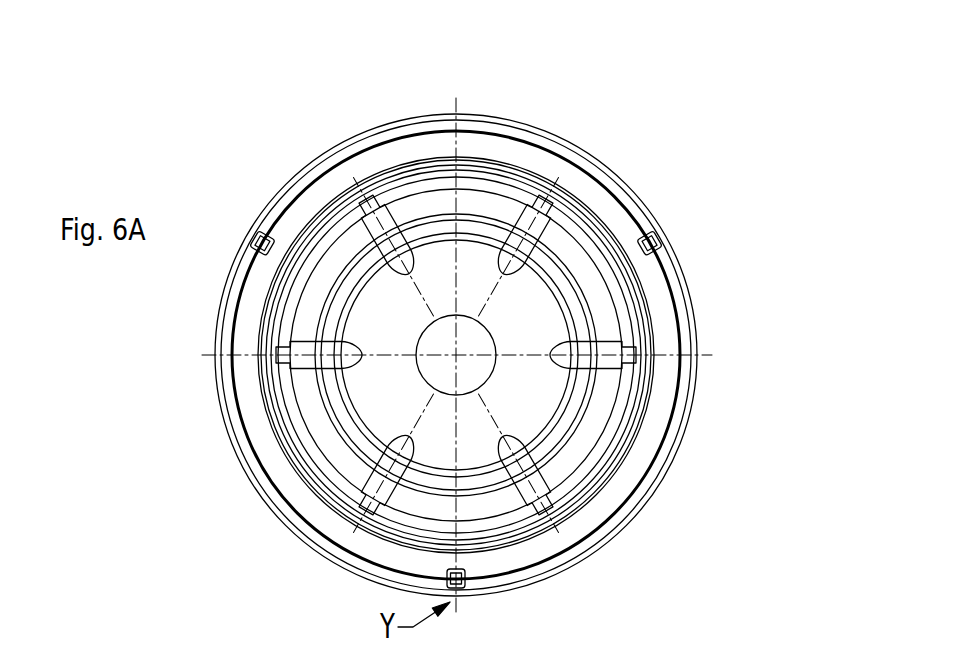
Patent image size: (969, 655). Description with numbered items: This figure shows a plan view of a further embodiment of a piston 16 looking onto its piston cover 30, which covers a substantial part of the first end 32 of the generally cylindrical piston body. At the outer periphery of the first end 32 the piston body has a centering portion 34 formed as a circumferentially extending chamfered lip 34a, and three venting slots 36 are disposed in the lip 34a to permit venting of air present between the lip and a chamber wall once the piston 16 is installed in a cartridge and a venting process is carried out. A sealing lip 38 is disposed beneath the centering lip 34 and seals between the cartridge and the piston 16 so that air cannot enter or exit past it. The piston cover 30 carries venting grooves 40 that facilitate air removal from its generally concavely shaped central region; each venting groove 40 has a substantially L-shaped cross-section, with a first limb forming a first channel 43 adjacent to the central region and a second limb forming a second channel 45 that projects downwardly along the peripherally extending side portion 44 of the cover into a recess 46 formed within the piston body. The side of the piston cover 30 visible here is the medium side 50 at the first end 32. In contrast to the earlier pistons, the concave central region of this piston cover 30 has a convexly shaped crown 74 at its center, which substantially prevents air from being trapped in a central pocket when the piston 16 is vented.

The piston 16 is at (560, 103).
The piston cover 30 is at (597, 419).
The first end 32 is at (593, 448).
The centering portion 34 is at (517, 355).
The chamfered lip 34a is at (676, 284).
The venting slots 36 is at (252, 232).
The sealing lip 38 is at (697, 326).
The venting grooves 40 is at (375, 208).
The first channel 43 is at (300, 345).
The side portion 44 is at (607, 480).
The second channel 45 is at (587, 537).
The recess 46 is at (343, 532).
The medium side 50 is at (297, 406).
The crown 74 is at (432, 391).